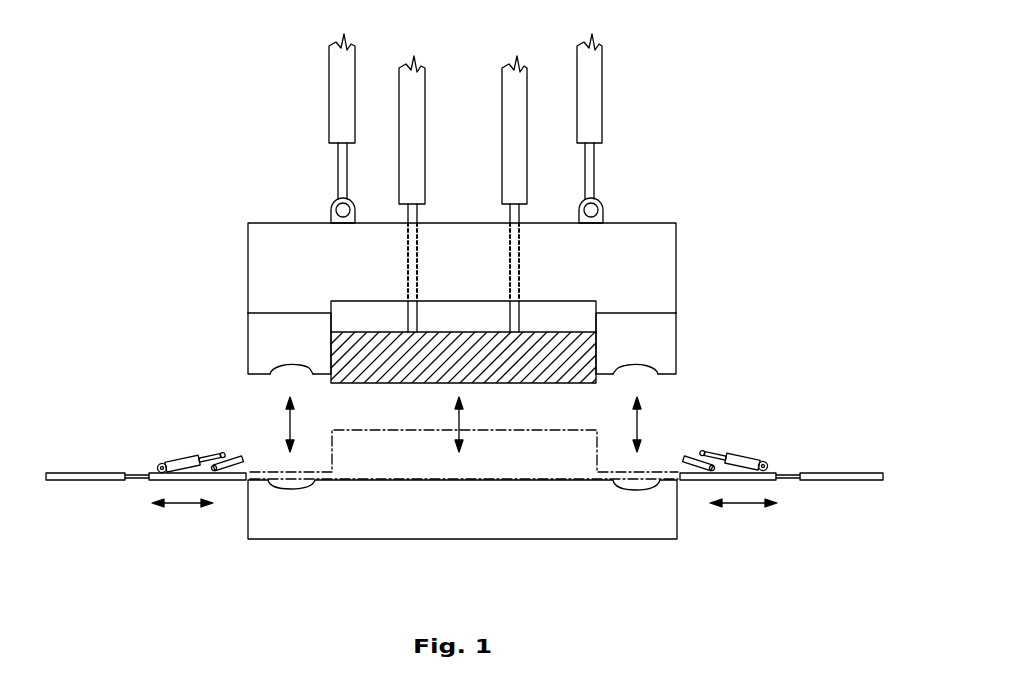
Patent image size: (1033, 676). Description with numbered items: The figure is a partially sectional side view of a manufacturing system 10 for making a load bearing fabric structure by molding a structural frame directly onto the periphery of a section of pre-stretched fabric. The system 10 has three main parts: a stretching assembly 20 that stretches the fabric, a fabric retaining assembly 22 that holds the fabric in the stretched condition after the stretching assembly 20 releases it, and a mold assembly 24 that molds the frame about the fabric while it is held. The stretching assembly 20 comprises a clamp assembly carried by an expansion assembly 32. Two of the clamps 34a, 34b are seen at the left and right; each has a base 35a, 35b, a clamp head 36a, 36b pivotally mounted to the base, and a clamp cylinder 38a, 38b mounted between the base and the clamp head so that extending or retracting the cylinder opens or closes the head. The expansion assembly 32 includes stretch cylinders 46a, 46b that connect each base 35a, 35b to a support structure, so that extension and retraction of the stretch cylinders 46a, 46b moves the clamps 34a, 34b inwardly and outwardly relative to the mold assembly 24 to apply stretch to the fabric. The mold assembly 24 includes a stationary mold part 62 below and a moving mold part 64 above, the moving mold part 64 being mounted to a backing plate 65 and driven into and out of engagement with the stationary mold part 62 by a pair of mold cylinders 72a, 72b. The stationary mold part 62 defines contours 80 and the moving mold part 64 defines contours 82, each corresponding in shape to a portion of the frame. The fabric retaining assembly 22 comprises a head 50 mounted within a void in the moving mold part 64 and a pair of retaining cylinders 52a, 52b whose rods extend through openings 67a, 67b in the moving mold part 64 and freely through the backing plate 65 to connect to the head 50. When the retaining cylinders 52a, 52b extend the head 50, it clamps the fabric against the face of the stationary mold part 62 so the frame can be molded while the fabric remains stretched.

The manufacturing system 10 is at (692, 134).
The stretching assembly 20 is at (760, 383).
The fabric retaining assembly 22 is at (583, 398).
The mold assembly 24 is at (694, 255).
The expansion assembly 32 is at (91, 450).
The clamp 34a is at (199, 444).
The clamp 34b is at (732, 446).
The base 35a is at (233, 478).
The base 35b is at (700, 480).
The clamp head 36a is at (235, 455).
The clamp head 36b is at (693, 455).
The clamp cylinder 38a is at (180, 457).
The clamp cylinder 38b is at (752, 457).
The stretch cylinder 46a is at (85, 482).
The stretch cylinder 46b is at (817, 480).
The head 50 is at (373, 383).
The retaining cylinder 52a is at (422, 103).
The retaining cylinder 52b is at (522, 108).
The stationary mold part 62 is at (503, 540).
The moving mold part 64 is at (670, 338).
The backing plate 65 is at (652, 297).
The opening 67a is at (417, 258).
The opening 67b is at (510, 257).
The mold cylinder 72a is at (348, 78).
The mold cylinder 72b is at (593, 87).
The contours 80 is at (277, 490).
The contours 82 is at (288, 367).